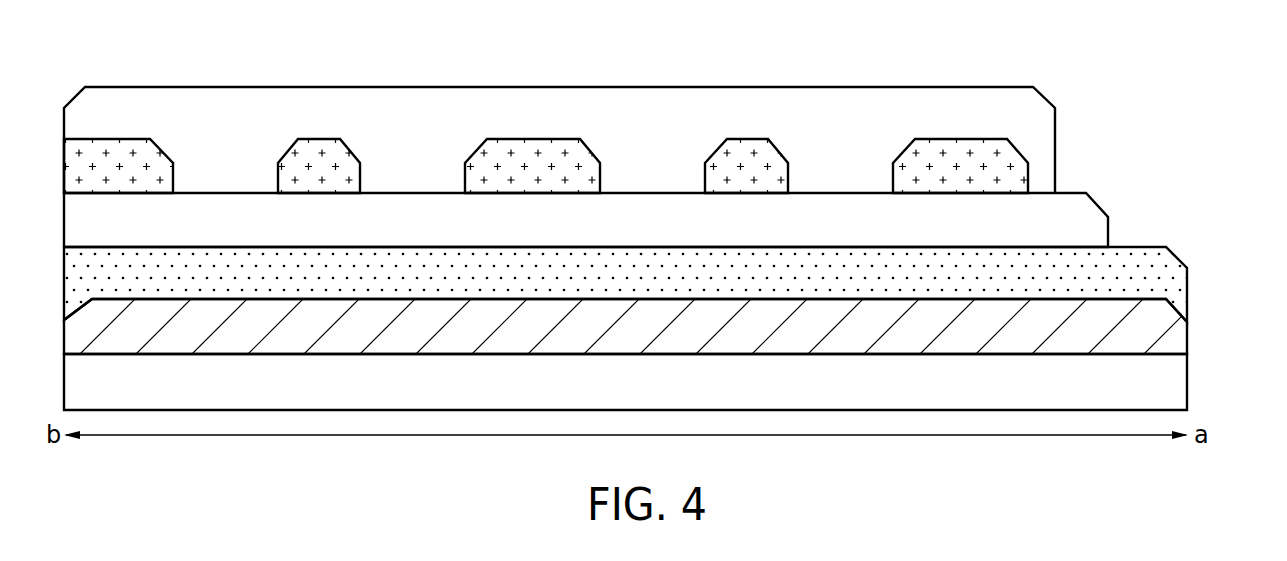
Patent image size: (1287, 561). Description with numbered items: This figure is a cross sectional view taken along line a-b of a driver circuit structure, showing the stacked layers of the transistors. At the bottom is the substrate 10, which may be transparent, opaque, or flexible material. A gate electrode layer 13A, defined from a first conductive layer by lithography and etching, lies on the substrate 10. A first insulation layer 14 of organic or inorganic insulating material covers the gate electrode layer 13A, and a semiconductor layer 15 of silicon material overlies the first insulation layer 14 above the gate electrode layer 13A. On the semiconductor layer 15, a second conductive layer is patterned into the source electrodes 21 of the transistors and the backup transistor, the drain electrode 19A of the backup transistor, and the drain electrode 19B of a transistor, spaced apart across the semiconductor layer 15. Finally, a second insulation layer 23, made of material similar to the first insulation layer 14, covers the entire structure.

The substrate 10 is at (1190, 381).
The gate electrode layer 13A is at (1190, 338).
The first insulation layer 14 is at (1190, 286).
The semiconductor layer 15 is at (1110, 224).
The drain electrode of the backup transistor 19A is at (742, 139).
The drain electrode of the transistor 19B is at (316, 139).
The source electrode 21 is at (102, 139).
The second insulation layer 23 is at (1057, 126).